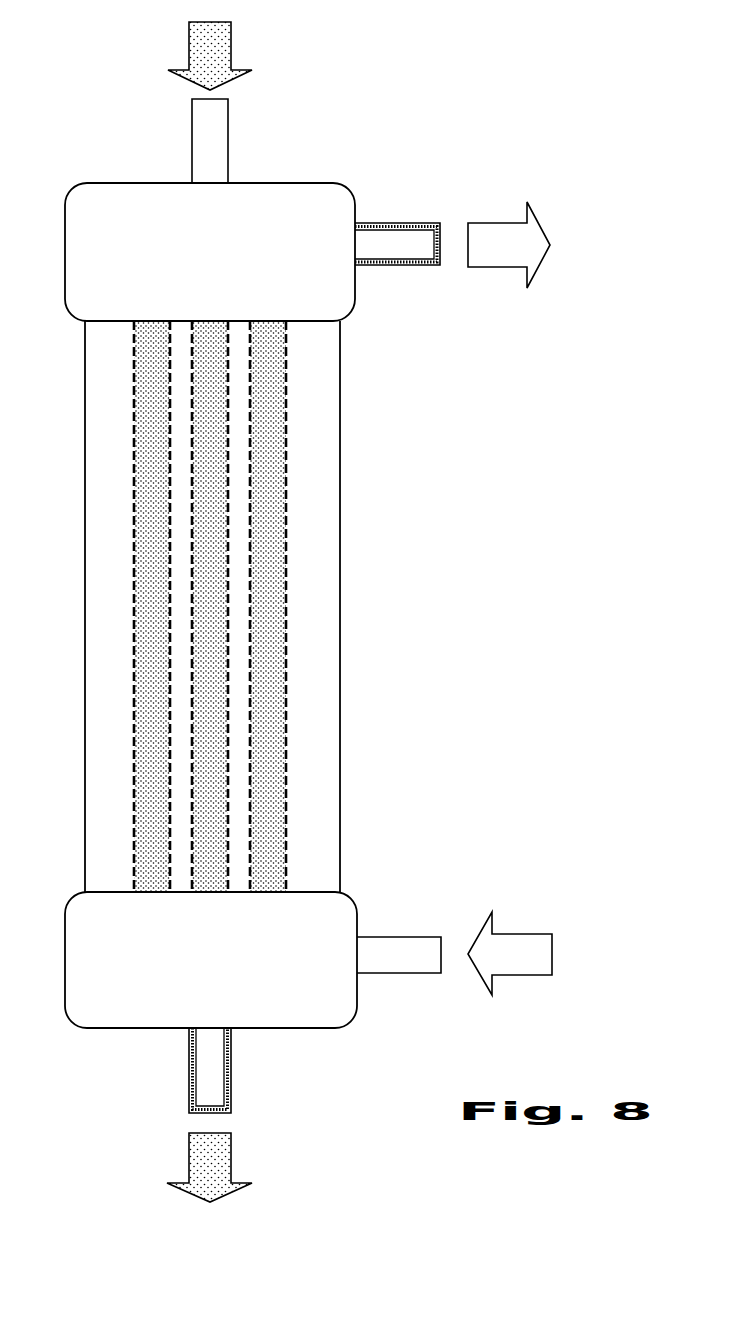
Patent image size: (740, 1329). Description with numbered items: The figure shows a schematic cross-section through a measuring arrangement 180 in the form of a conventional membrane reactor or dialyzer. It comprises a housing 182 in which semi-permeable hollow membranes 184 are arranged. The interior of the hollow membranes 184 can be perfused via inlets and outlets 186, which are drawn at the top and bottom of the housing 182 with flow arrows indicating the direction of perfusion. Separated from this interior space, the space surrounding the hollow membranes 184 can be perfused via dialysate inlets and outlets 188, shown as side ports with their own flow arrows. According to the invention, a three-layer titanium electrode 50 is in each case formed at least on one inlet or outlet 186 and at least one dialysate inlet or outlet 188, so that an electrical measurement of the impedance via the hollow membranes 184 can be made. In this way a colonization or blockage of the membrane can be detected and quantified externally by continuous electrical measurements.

The heat exchanger 180 is at (315, 134).
The housing 182 is at (341, 502).
The semi-permeable hollow membranes 184 is at (265, 433).
The inlets and outlets 186 is at (205, 133).
The dialysate inlets and outlets 188 is at (410, 238).
The three-layer titanium electrode 50 is at (432, 265).